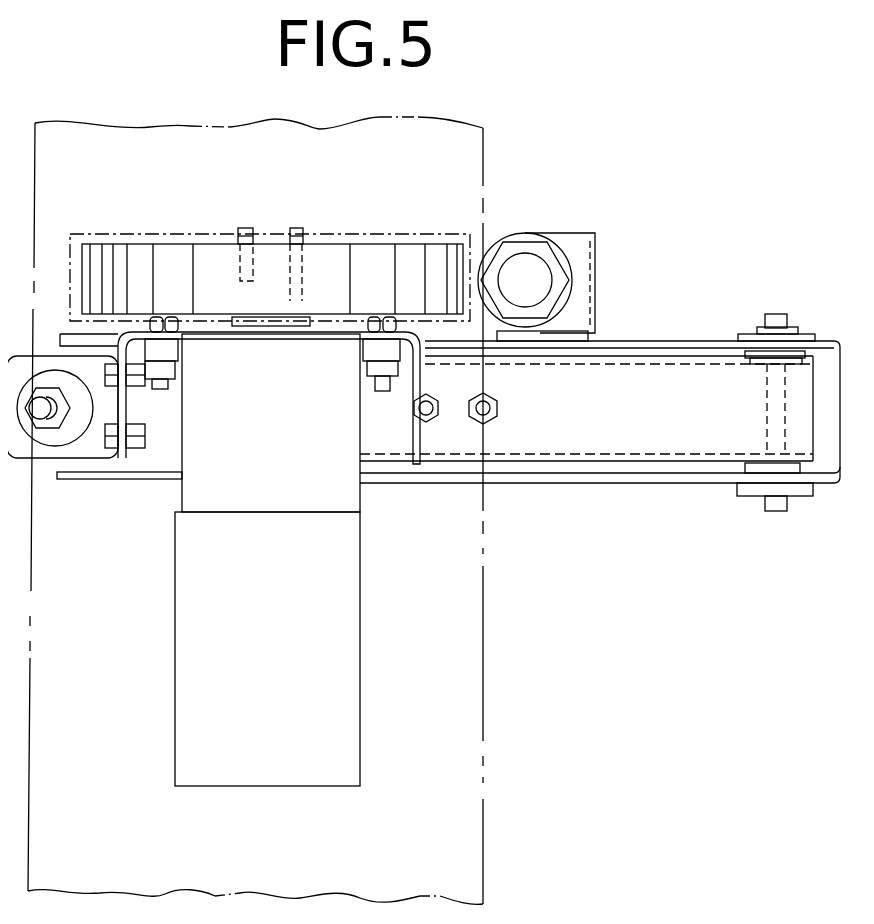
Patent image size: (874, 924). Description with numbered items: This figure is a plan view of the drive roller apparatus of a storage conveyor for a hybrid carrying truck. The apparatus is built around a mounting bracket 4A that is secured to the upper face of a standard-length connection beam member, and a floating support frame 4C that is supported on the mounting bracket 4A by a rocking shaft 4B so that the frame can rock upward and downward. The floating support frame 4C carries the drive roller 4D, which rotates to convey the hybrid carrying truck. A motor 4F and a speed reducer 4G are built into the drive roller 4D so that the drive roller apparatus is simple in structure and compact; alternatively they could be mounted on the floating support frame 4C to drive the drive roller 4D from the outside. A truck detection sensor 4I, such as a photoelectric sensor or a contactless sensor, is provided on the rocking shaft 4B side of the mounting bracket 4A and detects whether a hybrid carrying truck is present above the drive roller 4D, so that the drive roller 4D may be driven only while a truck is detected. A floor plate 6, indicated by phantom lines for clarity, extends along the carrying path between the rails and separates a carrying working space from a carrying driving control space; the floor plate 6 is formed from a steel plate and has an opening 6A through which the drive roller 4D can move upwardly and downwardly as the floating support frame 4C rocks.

The floor plate 6 is at (443, 675).
The opening 6A is at (418, 238).
The mounting bracket 4A is at (678, 385).
The rocking shaft 4B is at (770, 512).
The floating support frame 4C is at (565, 483).
The drive roller 4D is at (140, 258).
The motor 4F is at (200, 694).
The speed reducer 4G is at (215, 470).
The truck detection sensor 4I is at (522, 265).